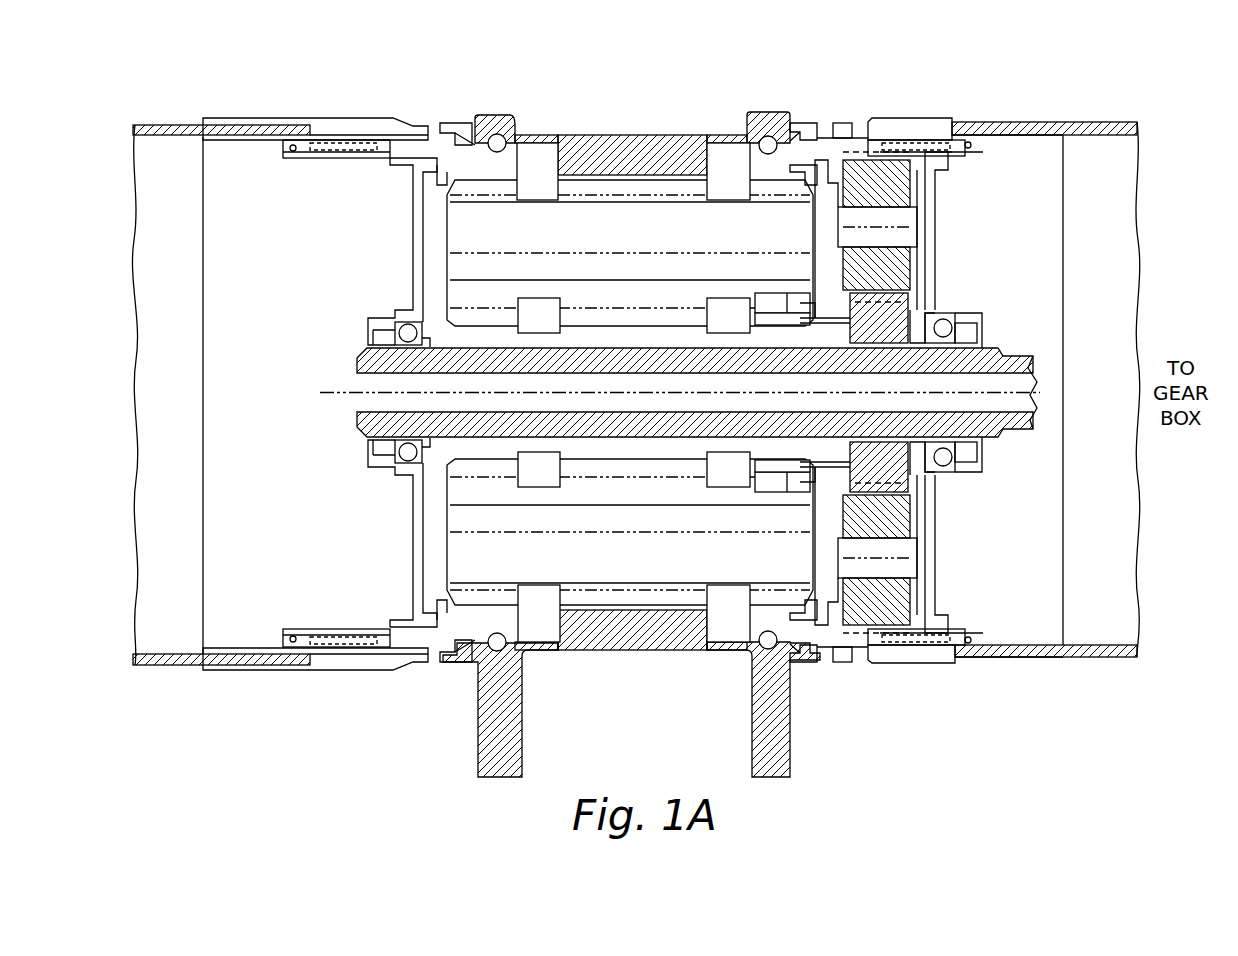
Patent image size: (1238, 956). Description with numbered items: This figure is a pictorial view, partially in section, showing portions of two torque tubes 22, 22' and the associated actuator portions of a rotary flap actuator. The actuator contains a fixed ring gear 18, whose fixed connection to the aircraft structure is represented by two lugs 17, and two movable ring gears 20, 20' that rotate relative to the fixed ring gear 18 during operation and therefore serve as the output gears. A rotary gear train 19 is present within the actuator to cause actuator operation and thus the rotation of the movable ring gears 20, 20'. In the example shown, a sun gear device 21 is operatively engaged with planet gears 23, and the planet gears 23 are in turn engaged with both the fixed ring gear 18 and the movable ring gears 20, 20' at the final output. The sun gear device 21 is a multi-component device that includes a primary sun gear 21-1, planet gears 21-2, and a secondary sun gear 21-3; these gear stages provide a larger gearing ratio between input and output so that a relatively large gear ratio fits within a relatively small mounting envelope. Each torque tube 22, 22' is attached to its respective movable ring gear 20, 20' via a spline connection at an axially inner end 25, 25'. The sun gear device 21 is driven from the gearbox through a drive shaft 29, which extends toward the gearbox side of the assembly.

The lugs 17 is at (517, 717).
The fixed ring gear 18 is at (654, 136).
The rotary gear train 19 is at (976, 195).
The movable ring gear 20 is at (885, 358).
The movable ring gear 20' is at (421, 358).
The sun gear device 21 is at (945, 280).
The primary sun gear 21-1 is at (880, 310).
The planet gears 21-2 is at (887, 180).
The secondary sun gear 21-3 is at (789, 307).
The torque tube 22 is at (1048, 363).
The torque tube 22' is at (221, 368).
The planet gears 23 is at (623, 223).
The axially inner end 25 is at (965, 365).
The axially inner end 25' is at (315, 371).
The drive shaft 29 is at (1033, 354).